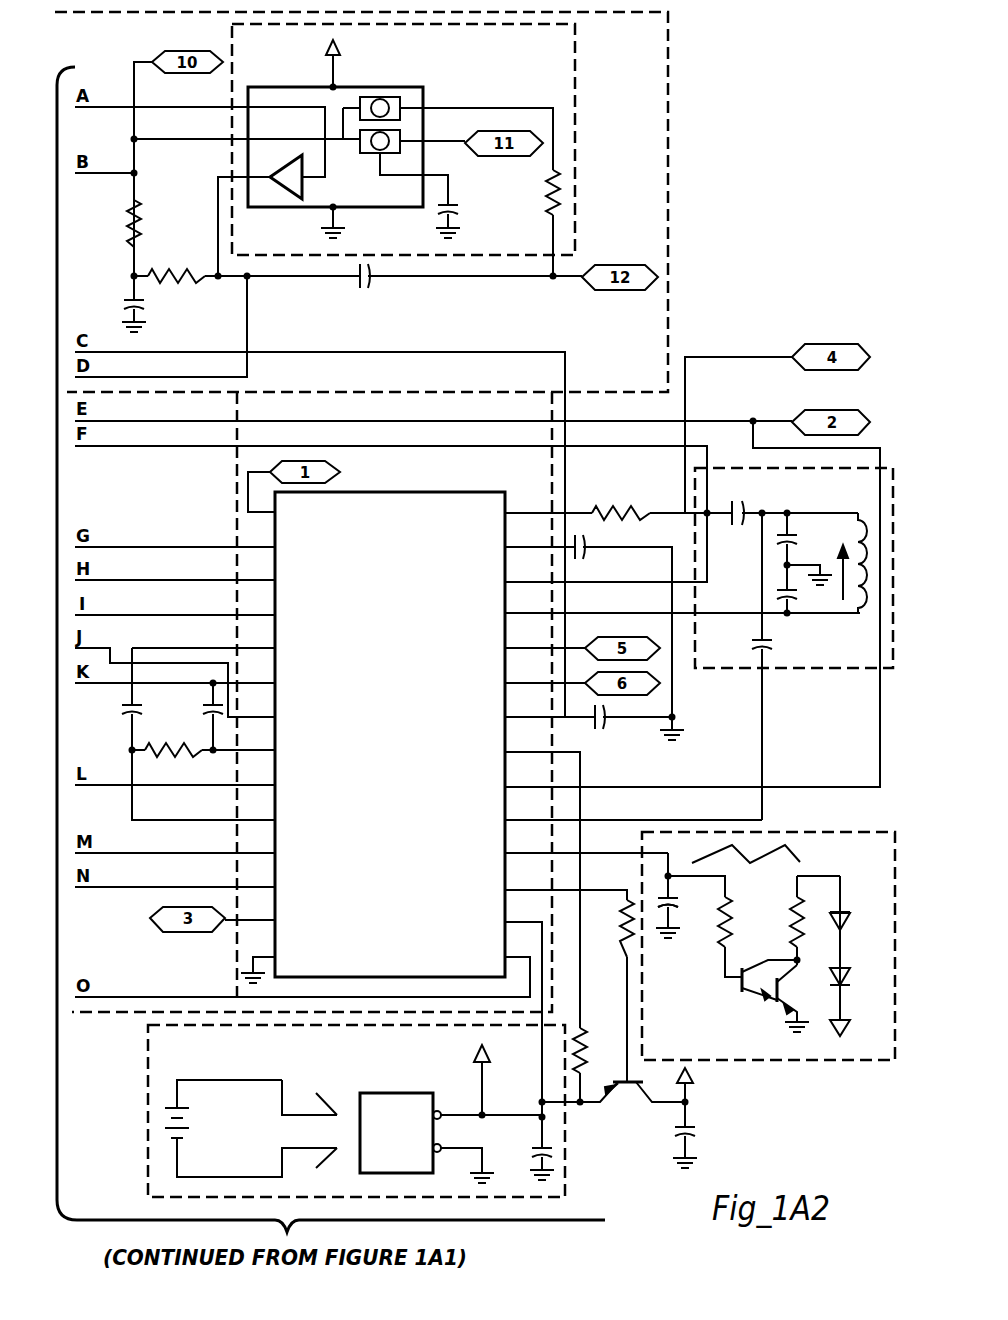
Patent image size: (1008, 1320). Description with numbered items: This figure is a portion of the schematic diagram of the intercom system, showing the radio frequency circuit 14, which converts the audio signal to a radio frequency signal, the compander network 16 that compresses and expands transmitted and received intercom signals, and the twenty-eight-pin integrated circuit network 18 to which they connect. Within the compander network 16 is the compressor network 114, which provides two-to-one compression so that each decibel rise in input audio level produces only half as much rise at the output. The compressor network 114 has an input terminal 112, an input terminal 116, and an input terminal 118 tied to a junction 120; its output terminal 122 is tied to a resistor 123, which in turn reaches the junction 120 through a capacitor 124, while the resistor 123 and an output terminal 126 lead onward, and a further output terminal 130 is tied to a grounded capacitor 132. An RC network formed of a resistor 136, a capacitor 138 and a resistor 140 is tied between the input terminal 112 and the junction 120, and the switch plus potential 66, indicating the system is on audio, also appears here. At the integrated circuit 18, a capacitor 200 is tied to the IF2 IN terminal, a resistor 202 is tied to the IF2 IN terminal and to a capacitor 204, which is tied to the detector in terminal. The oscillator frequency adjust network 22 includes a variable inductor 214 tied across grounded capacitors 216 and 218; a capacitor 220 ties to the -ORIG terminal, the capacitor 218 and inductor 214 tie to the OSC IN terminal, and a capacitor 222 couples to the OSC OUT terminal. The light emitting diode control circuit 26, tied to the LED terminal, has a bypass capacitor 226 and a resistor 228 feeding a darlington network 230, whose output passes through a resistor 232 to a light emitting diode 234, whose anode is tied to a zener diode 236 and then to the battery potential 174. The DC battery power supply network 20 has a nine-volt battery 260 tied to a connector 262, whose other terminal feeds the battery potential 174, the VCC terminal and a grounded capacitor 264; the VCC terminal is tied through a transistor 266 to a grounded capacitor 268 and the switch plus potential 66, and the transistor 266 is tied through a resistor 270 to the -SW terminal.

The radio frequency circuit 14 is at (122, 1013).
The compander network 16 is at (668, 85).
The integrated circuit network 18 is at (410, 388).
The DC battery power supply network 20 is at (148, 1104).
The oscillator frequency adjust network 22 is at (806, 672).
The light emitting diode control circuit 26 is at (825, 832).
The switch plus potential 66 is at (338, 50).
The input terminal of compressor network 112 is at (184, 141).
The compressor network 114 is at (576, 82).
The input terminal of compressor 116 is at (188, 102).
The input terminal of compressor 118 is at (218, 209).
The junction 120 is at (218, 280).
The output terminal of compressor 122 is at (488, 107).
The resistor 123 is at (548, 198).
The capacitor 124 is at (465, 291).
The output terminal of compressor 126 is at (455, 133).
The output terminal of compressor 130 is at (450, 180).
The capacitor 132 is at (456, 214).
The resistor 136 is at (140, 238).
The capacitor 138 is at (140, 306).
The resistor 140 is at (162, 268).
The battery potential 174 is at (847, 1030).
The capacitor 200 is at (202, 712).
The resistor 202 is at (174, 756).
The capacitor 204 is at (122, 712).
The variable inductor 214 is at (864, 516).
The capacitor 216 is at (797, 544).
The capacitor 218 is at (777, 596).
The capacitor 220 is at (774, 648).
The capacitor 222 is at (728, 512).
The bypass capacitor 226 is at (678, 906).
The resistor 228 is at (731, 936).
The darlington network 230 is at (750, 1000).
The resistor 232 is at (797, 894).
The light emitting diode 234 is at (848, 912).
The zener diode 236 is at (850, 975).
The nine-volt battery 260 is at (186, 1118).
The connector 262 is at (415, 1146).
The capacitor 264 is at (532, 1152).
The transistor 266 is at (614, 1108).
The capacitor 268 is at (694, 1136).
The resistor 270 is at (620, 948).